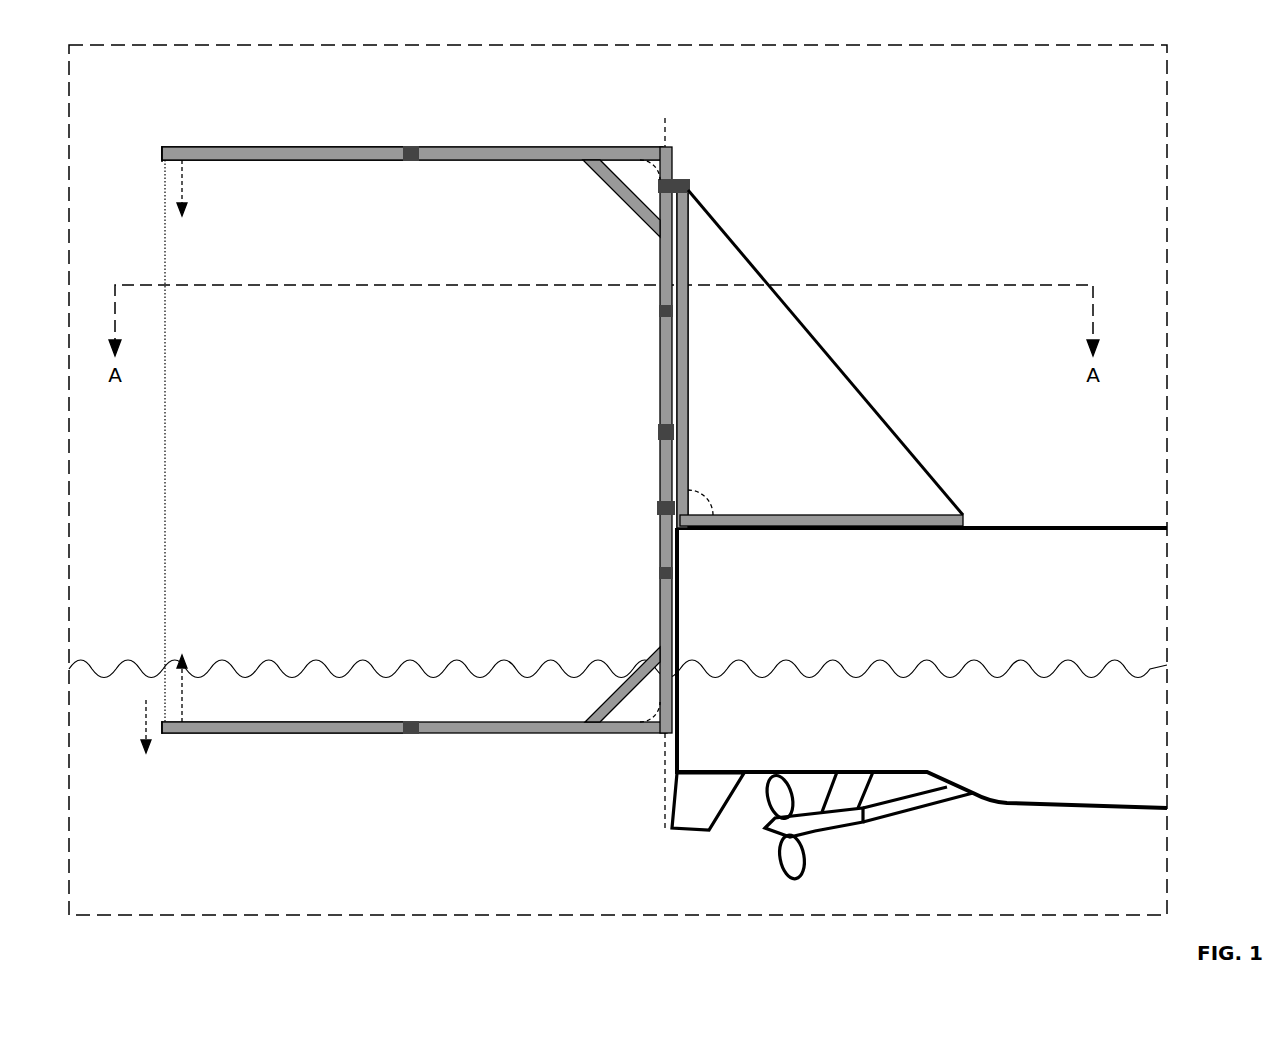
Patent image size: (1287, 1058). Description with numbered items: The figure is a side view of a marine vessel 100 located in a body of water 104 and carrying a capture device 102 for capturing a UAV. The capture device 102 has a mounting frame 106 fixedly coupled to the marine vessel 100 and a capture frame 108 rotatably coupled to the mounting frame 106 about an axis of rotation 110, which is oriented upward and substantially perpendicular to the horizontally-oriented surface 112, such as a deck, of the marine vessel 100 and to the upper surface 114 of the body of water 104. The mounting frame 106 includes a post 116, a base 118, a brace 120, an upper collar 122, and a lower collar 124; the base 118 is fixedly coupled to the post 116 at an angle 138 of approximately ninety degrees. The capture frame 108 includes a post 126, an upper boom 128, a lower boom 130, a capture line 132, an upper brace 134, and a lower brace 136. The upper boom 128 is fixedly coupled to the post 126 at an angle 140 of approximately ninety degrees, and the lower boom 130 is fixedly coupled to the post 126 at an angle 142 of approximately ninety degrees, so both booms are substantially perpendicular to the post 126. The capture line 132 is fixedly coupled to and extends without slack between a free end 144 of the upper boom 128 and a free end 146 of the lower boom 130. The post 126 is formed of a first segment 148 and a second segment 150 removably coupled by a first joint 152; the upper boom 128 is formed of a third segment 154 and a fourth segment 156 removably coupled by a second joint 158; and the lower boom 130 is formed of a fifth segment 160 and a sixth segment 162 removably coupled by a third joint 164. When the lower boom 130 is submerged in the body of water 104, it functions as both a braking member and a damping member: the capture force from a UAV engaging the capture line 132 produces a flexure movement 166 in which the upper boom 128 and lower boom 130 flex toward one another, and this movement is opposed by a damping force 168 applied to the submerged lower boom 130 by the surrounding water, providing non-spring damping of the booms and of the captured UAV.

The marine vessel 100 is at (1072, 527).
The capture device 102 is at (690, 138).
The body of water 104 is at (505, 843).
The mounting frame 106 is at (689, 396).
The capture frame 108 is at (568, 147).
The axis of rotation 110 is at (664, 136).
The horizontally-oriented surface 112 is at (1010, 527).
The upper surface 114 is at (114, 662).
The post 116 is at (689, 359).
The base 118 is at (834, 515).
The brace 120 is at (834, 358).
The upper collar 122 is at (688, 185).
The lower collar 124 is at (660, 509).
The post 126 is at (660, 371).
The upper boom 128 is at (335, 147).
The lower boom 130 is at (335, 734).
The capture line 132 is at (167, 428).
The upper brace 134 is at (652, 232).
The lower brace 136 is at (640, 672).
The angle 138 is at (712, 484).
The angle 140 is at (648, 172).
The angle 142 is at (642, 702).
The free end 144 is at (165, 147).
The free end 146 is at (165, 734).
The first segment 148 is at (660, 312).
The second segment 150 is at (660, 574).
The first joint 152 is at (660, 433).
The third segment 154 is at (256, 147).
The fourth segment 156 is at (496, 147).
The second joint 158 is at (412, 147).
The fifth segment 160 is at (256, 734).
The sixth segment 162 is at (496, 734).
The third joint 164 is at (412, 734).
The flexure movement 166 is at (188, 183).
The damping force 168 is at (140, 722).